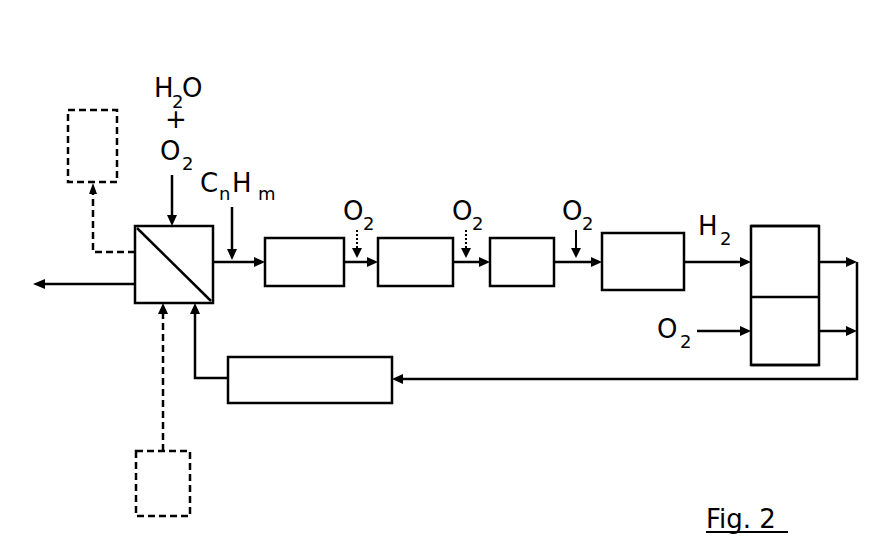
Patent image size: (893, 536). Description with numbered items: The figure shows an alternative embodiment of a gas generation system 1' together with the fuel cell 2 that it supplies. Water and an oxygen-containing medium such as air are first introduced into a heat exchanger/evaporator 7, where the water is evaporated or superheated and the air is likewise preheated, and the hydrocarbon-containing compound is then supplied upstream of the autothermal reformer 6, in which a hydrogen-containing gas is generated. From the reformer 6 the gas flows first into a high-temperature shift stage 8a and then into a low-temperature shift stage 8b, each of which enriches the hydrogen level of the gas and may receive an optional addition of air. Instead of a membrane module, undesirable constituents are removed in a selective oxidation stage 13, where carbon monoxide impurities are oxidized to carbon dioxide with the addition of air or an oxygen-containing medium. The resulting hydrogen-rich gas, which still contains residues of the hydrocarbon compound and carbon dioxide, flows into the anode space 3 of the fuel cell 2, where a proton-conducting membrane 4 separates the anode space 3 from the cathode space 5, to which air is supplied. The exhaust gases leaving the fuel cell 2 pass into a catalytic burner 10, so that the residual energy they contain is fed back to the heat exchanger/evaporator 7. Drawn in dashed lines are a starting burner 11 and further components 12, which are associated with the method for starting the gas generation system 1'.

The gas generation system 1' is at (411, 67).
The fuel cell 2 is at (803, 207).
The anode space 3 is at (793, 286).
The proton-conducting membrane 4 is at (805, 297).
The cathode space 5 is at (793, 354).
The reformer 6 is at (326, 258).
The heat exchanger/evaporator 7 is at (155, 282).
The high-temperature shift stage 8a is at (421, 258).
The low-temperature shift stage 8b is at (525, 253).
The catalytic burner 10 is at (305, 400).
The starting burner 11 is at (163, 497).
The further components 12 is at (80, 137).
The selective oxidation stage 13 is at (647, 247).